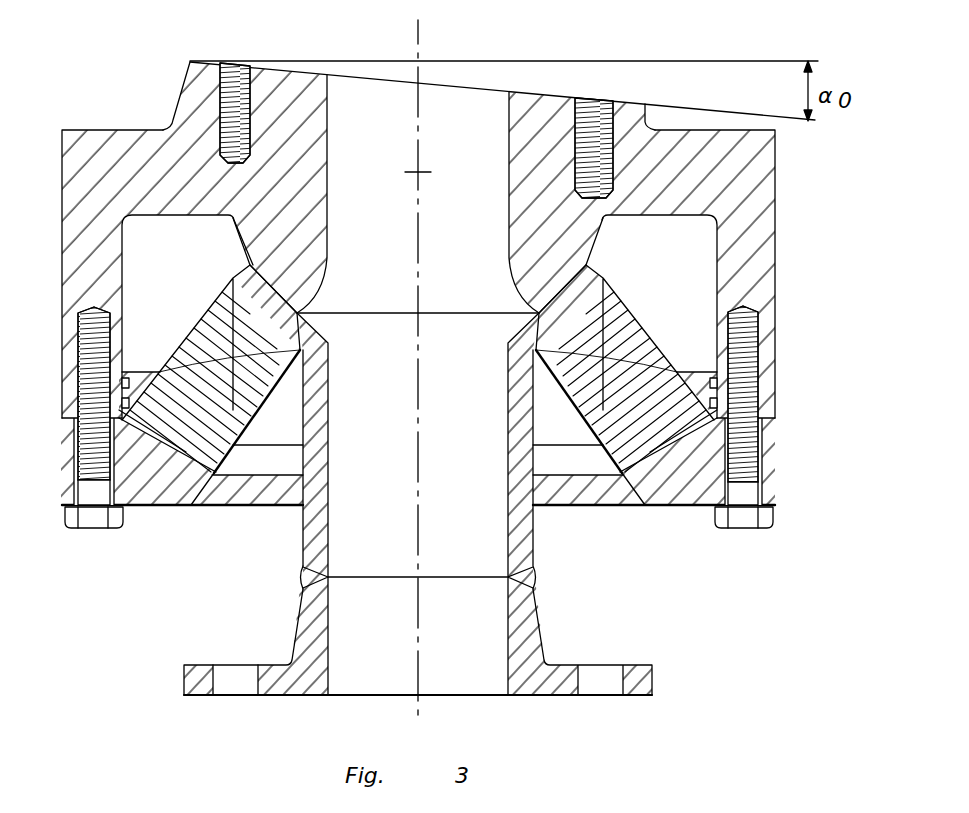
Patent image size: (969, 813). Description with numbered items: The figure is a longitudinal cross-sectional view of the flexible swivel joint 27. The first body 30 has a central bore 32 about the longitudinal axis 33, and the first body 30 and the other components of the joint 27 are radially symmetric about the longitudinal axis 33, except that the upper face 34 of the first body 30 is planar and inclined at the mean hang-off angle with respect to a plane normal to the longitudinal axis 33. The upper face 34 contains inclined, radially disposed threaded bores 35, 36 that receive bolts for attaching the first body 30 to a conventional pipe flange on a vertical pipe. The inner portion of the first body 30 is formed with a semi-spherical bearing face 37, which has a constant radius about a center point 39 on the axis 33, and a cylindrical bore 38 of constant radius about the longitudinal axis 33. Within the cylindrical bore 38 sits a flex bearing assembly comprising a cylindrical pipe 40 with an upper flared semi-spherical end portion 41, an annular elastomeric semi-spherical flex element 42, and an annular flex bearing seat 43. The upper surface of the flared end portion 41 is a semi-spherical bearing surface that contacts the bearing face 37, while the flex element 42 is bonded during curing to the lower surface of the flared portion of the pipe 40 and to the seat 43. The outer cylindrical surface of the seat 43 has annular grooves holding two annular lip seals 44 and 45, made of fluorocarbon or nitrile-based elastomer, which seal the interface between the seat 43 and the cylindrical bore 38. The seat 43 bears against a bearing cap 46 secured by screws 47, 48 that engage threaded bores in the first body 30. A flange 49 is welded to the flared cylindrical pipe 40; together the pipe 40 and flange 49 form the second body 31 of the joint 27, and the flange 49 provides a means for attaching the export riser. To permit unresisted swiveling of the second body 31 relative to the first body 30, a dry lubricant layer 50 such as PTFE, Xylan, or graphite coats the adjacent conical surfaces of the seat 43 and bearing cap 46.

The flexible swivel joint 27 is at (718, 37).
The first body 30 is at (777, 168).
The second body 31 is at (290, 571).
The central bore 32 is at (490, 98).
The longitudinal axis 33 is at (418, 36).
The upper face 34 is at (287, 78).
The threaded bore 35 is at (600, 105).
The threaded bore 36 is at (220, 140).
The semi-spherical bearing face 37 is at (594, 250).
The cylindrical bore 38 is at (717, 278).
The center point 39 is at (420, 173).
The cylindrical pipe 40 is at (533, 542).
The upper flared semi-spherical end portion 41 is at (237, 268).
The annular elastomeric semi-spherical flex element 42 is at (650, 321).
The annular flex bearing seat 43 is at (607, 460).
The annular lip seal 44 is at (717, 402).
The annular lip seal 45 is at (717, 382).
The bearing cap 46 is at (695, 505).
The screw 47 is at (747, 528).
The screw 48 is at (95, 530).
The flange 49 is at (543, 622).
The dry lubricant layer 50 is at (645, 475).